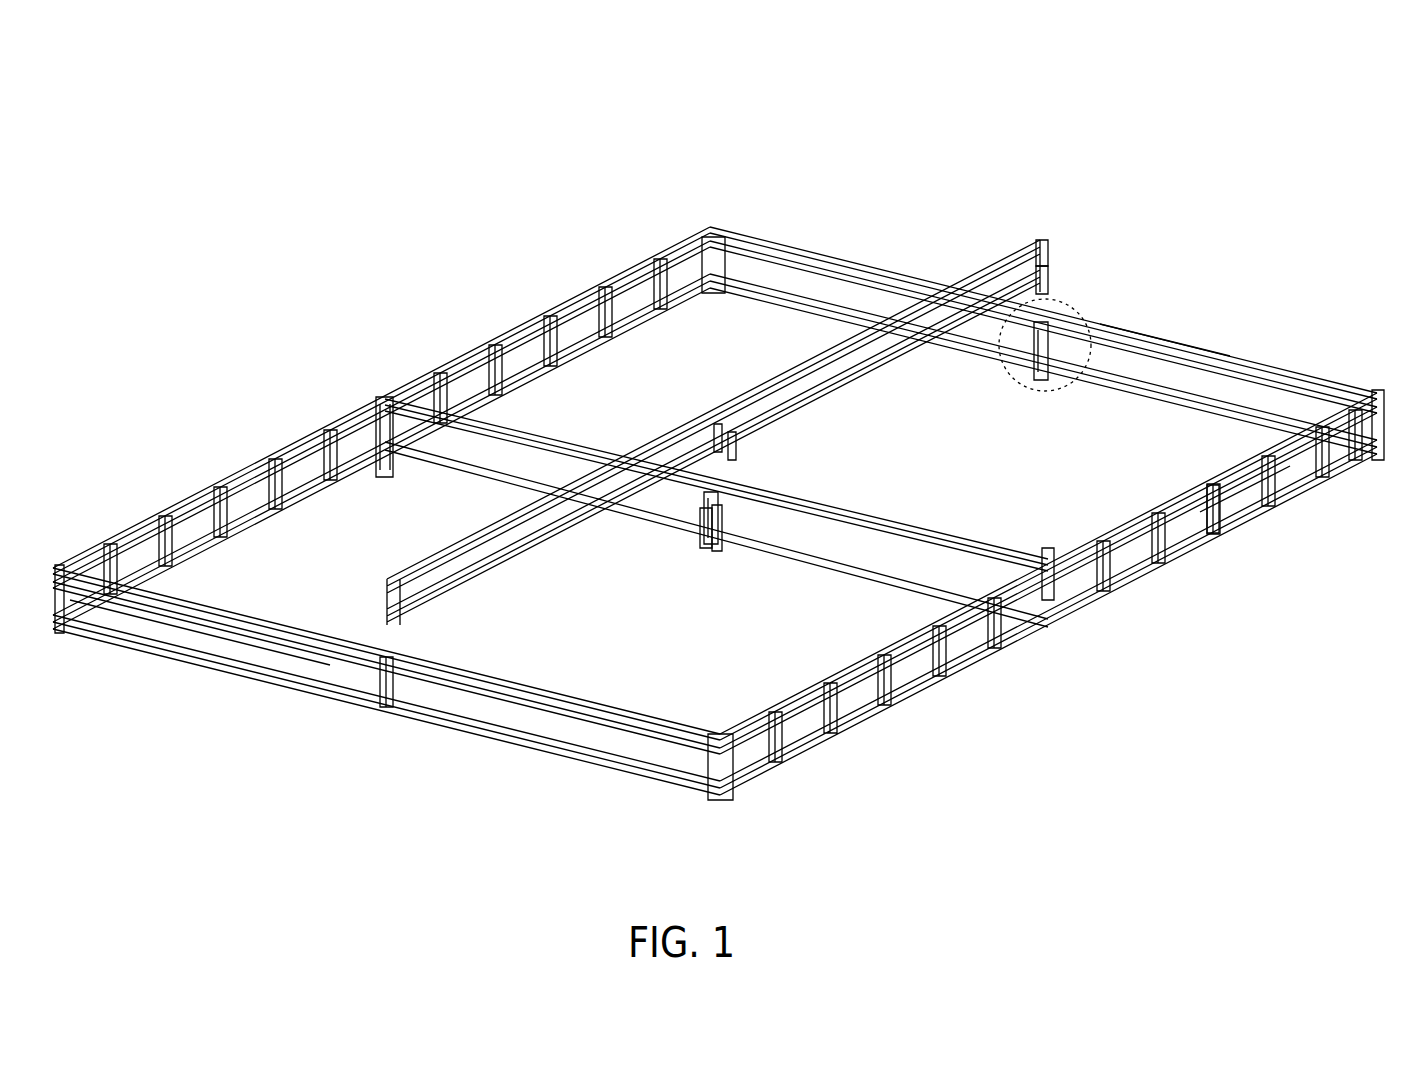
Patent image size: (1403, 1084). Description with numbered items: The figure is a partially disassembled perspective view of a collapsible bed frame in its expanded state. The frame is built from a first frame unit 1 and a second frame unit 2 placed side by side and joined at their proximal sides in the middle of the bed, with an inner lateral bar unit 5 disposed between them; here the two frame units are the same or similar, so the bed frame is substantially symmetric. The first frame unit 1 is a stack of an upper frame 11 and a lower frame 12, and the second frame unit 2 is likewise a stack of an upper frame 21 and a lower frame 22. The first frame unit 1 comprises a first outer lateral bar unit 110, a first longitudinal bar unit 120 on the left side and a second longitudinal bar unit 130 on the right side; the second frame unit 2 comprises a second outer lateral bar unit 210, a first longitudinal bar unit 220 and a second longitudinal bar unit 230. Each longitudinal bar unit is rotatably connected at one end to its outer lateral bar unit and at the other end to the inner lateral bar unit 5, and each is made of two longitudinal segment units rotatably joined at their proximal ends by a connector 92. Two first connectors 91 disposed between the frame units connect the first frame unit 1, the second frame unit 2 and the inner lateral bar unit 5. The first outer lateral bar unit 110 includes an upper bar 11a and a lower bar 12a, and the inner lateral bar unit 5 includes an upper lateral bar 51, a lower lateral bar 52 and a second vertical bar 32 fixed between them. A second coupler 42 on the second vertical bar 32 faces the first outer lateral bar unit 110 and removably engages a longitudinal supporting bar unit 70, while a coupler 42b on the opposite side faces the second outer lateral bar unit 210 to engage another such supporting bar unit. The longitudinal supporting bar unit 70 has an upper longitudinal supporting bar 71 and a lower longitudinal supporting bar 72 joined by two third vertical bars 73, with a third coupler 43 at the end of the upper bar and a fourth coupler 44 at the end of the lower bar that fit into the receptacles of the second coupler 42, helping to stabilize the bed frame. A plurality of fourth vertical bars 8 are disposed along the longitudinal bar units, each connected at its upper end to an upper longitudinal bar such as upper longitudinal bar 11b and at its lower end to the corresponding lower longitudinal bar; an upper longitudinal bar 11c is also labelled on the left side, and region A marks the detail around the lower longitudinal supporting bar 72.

The first frame unit 1 is at (978, 48).
The upper frame 11 is at (815, 248).
The upper bar 11a is at (1166, 336).
The upper longitudinal bar 11b is at (1243, 540).
The rail section 11c is at (542, 302).
The lower frame 12 is at (877, 262).
The lower bar 12a is at (1218, 398).
The first outer lateral bar unit 110 is at (1305, 365).
The first longitudinal bar unit 120 is at (470, 342).
The second longitudinal bar unit 130 is at (1140, 525).
The second frame unit 2 is at (218, 624).
The upper frame 21 is at (467, 680).
The lower frame 22 is at (527, 745).
The second outer lateral bar unit 210 is at (340, 655).
The first longitudinal bar unit 220 is at (180, 492).
The second longitudinal bar unit 230 is at (838, 686).
The fourth vertical bar 8 is at (635, 333).
The first connector 91 is at (383, 400).
The connector 92 is at (1213, 480).
The longitudinal supporting bar unit 70 is at (810, 355).
The upper longitudinal supporting bar 71 is at (1048, 252).
The lower longitudinal supporting bar 72 is at (1076, 302).
The third vertical bar 73 is at (1050, 290).
The inner lateral bar unit 5 is at (878, 533).
The upper lateral bar 51 is at (922, 535).
The lower lateral bar 52 is at (847, 580).
The second vertical bar 32 is at (722, 500).
The second coupler 42 is at (720, 550).
The coupler 42b is at (706, 548).
The third coupler 43 is at (717, 422).
The fourth coupler 44 is at (742, 448).
The detail region A is at (1045, 380).